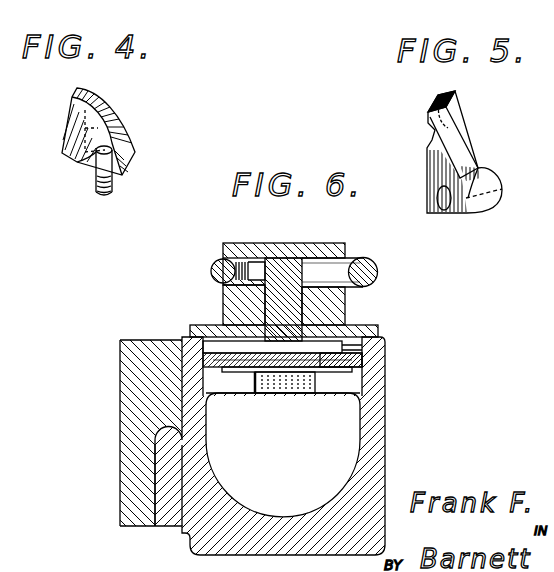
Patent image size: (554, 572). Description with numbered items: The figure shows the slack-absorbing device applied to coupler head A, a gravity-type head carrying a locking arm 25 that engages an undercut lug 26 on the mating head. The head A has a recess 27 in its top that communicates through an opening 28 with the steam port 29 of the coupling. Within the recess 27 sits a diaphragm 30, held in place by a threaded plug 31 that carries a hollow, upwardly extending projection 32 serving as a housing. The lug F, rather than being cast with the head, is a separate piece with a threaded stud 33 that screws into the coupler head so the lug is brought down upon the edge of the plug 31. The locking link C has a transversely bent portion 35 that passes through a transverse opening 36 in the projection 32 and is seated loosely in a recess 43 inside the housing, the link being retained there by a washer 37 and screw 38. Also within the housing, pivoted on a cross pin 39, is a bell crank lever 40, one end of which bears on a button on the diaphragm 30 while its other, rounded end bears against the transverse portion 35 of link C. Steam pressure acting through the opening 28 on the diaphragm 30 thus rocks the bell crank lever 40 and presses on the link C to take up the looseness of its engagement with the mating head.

In FIG. 4, the lug F is at (115, 111).
In FIG. 4, the threaded stud 33 is at (100, 194).
In FIG. 5, the bell crank lever 40 is at (460, 142).
In FIG. 6, the bell crank lever 40 is at (292, 302).
In FIG. 6, the coupler head A is at (377, 429).
In FIG. 6, the locking arm 25 is at (123, 437).
In FIG. 6, the undercut lug 26 is at (163, 478).
In FIG. 6, the steam port 29 is at (343, 455).
In FIG. 6, the threaded plug 31 is at (377, 330).
In FIG. 6, the recess 43 is at (252, 258).
In FIG. 6, the transverse opening 36 is at (293, 259).
In FIG. 6, the transversely bent portion 35 is at (330, 268).
In FIG. 6, the locking link C is at (378, 272).
In FIG. 6, the hollow upwardly extending projection 32 is at (223, 306).
In FIG. 6, the washer 37 is at (222, 256).
In FIG. 6, the screw 38 is at (211, 272).
In FIG. 6, the recess 27 is at (263, 375).
In FIG. 6, the diaphragm 30 is at (250, 372).
In FIG. 6, the cross pin 39 is at (317, 366).
In FIG. 6, the opening 28 is at (297, 385).